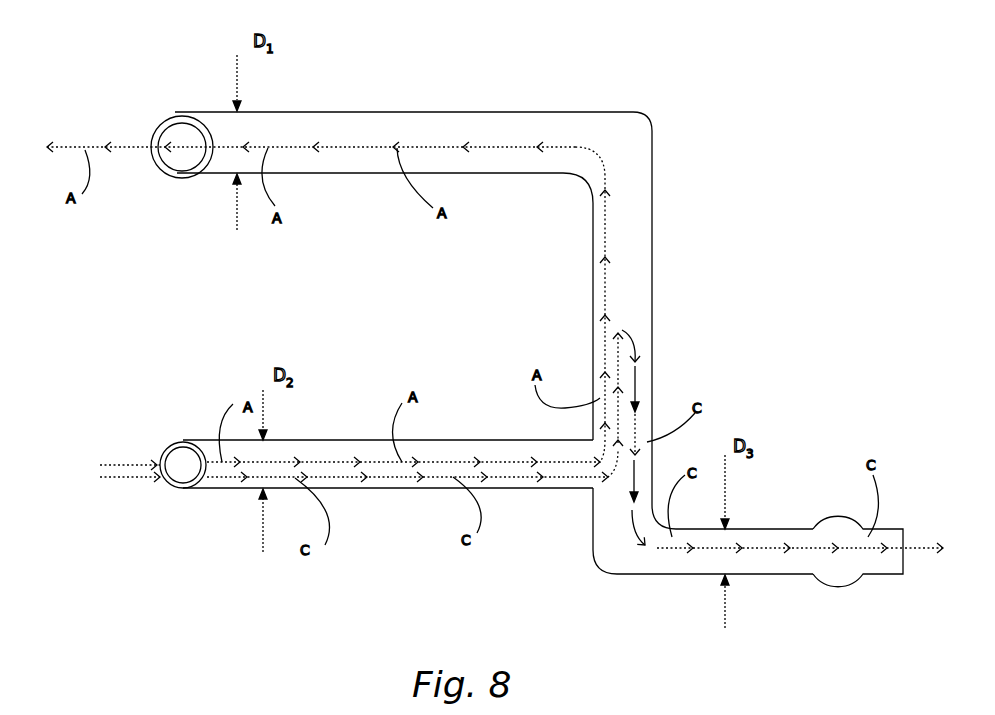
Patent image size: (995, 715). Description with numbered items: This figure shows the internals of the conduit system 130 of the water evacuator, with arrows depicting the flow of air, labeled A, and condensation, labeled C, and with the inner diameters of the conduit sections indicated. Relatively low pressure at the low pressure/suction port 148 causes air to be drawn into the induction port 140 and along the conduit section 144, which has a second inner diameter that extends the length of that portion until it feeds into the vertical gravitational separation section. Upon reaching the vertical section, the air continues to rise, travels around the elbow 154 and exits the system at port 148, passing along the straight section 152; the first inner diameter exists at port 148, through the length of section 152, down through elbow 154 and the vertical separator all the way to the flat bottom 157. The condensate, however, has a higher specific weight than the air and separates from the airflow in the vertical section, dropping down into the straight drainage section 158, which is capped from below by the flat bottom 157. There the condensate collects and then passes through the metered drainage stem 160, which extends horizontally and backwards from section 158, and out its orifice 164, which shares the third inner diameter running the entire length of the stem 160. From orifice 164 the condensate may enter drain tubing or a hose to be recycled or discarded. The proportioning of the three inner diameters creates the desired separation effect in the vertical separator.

The conduit system 130 is at (793, 70).
The induction port 140 is at (184, 460).
The conduit section 144 is at (290, 440).
The low pressure/suction port 148 is at (181, 136).
The straight section 152 is at (383, 112).
The elbow 154 is at (645, 120).
The flat bottom 157 is at (619, 575).
The straight drainage section 158 is at (593, 540).
The metered drainage stem 160 is at (775, 529).
The orifice 164 is at (903, 556).